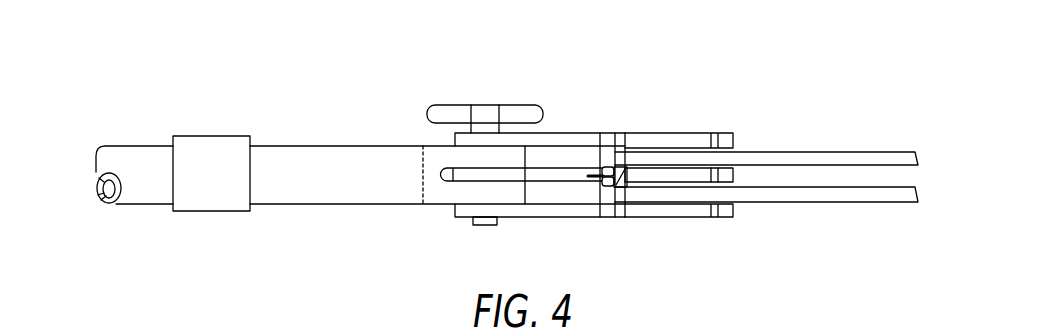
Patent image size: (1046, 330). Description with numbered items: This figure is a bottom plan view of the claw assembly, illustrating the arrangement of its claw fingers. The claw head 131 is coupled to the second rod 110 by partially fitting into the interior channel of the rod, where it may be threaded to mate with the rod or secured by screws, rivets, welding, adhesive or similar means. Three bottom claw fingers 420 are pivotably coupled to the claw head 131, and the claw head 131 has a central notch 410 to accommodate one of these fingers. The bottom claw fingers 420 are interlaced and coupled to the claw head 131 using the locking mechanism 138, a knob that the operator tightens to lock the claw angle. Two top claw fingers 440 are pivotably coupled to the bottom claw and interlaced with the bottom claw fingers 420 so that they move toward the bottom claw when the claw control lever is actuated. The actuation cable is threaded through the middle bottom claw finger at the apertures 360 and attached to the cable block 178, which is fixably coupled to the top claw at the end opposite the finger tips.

The second rod 110 is at (358, 197).
The claw head 131 is at (440, 200).
The locking mechanism 138 is at (445, 112).
The central notch 410 is at (502, 175).
The apertures 360 is at (595, 173).
The cable block 178 is at (623, 172).
The bottom claw fingers 420 is at (740, 180).
The top claw fingers 440 is at (915, 195).